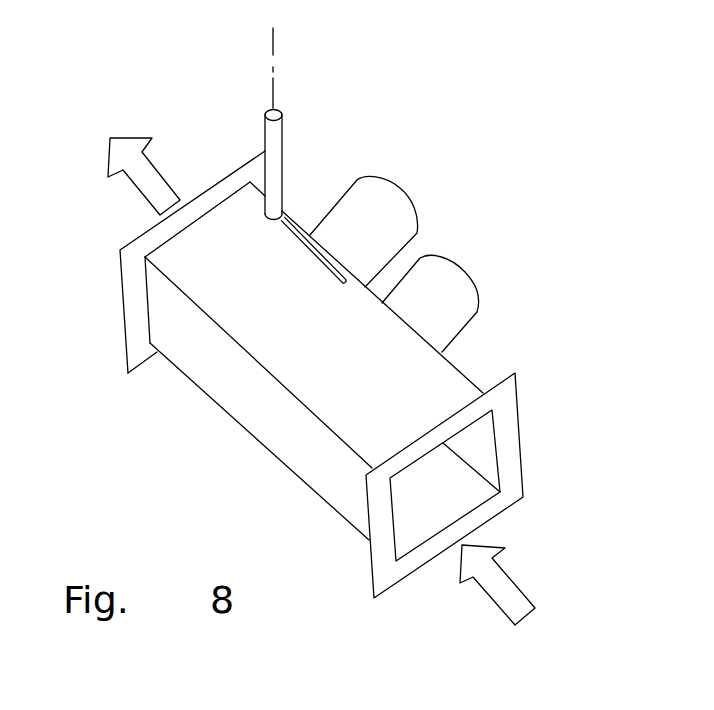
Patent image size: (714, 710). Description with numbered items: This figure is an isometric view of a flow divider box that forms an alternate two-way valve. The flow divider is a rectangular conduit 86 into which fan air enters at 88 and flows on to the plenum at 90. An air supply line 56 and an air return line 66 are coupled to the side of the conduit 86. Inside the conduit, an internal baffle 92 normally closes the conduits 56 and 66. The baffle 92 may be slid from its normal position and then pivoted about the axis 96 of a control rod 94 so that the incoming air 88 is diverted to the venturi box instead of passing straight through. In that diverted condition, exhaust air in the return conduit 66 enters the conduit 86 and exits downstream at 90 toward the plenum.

The air supply line 56 is at (460, 268).
The air return line 66 is at (397, 188).
The rectangular conduit 86 is at (263, 441).
The fan air entering 88 is at (492, 590).
The flow to the plenum 90 is at (146, 171).
The internal baffle 92 is at (297, 224).
The control rod 94 is at (277, 132).
The axis 96 is at (274, 43).